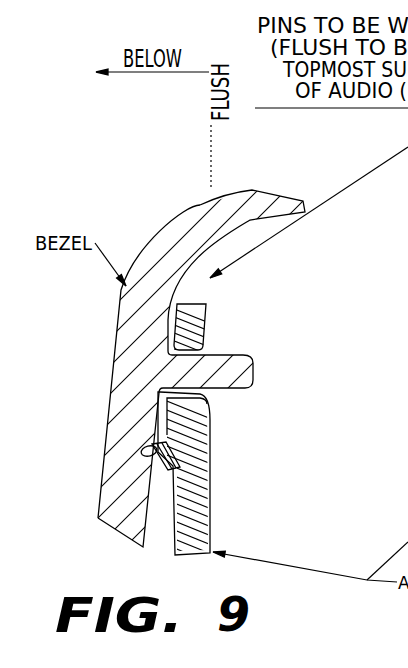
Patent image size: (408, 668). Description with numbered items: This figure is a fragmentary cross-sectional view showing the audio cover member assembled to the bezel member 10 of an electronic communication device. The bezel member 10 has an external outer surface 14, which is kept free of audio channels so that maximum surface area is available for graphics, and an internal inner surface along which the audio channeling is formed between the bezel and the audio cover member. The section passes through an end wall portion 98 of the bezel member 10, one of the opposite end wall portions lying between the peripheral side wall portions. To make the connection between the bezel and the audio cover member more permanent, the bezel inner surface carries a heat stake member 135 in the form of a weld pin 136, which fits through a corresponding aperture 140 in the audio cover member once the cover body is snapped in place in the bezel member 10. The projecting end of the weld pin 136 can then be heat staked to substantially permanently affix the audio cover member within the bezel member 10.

The bezel member 10 is at (97, 517).
The outer surface 14 is at (111, 392).
The end wall portion 98 is at (224, 202).
The heat stake member 135 is at (243, 346).
The weld pin 136 is at (244, 371).
The aperture 140 is at (208, 393).